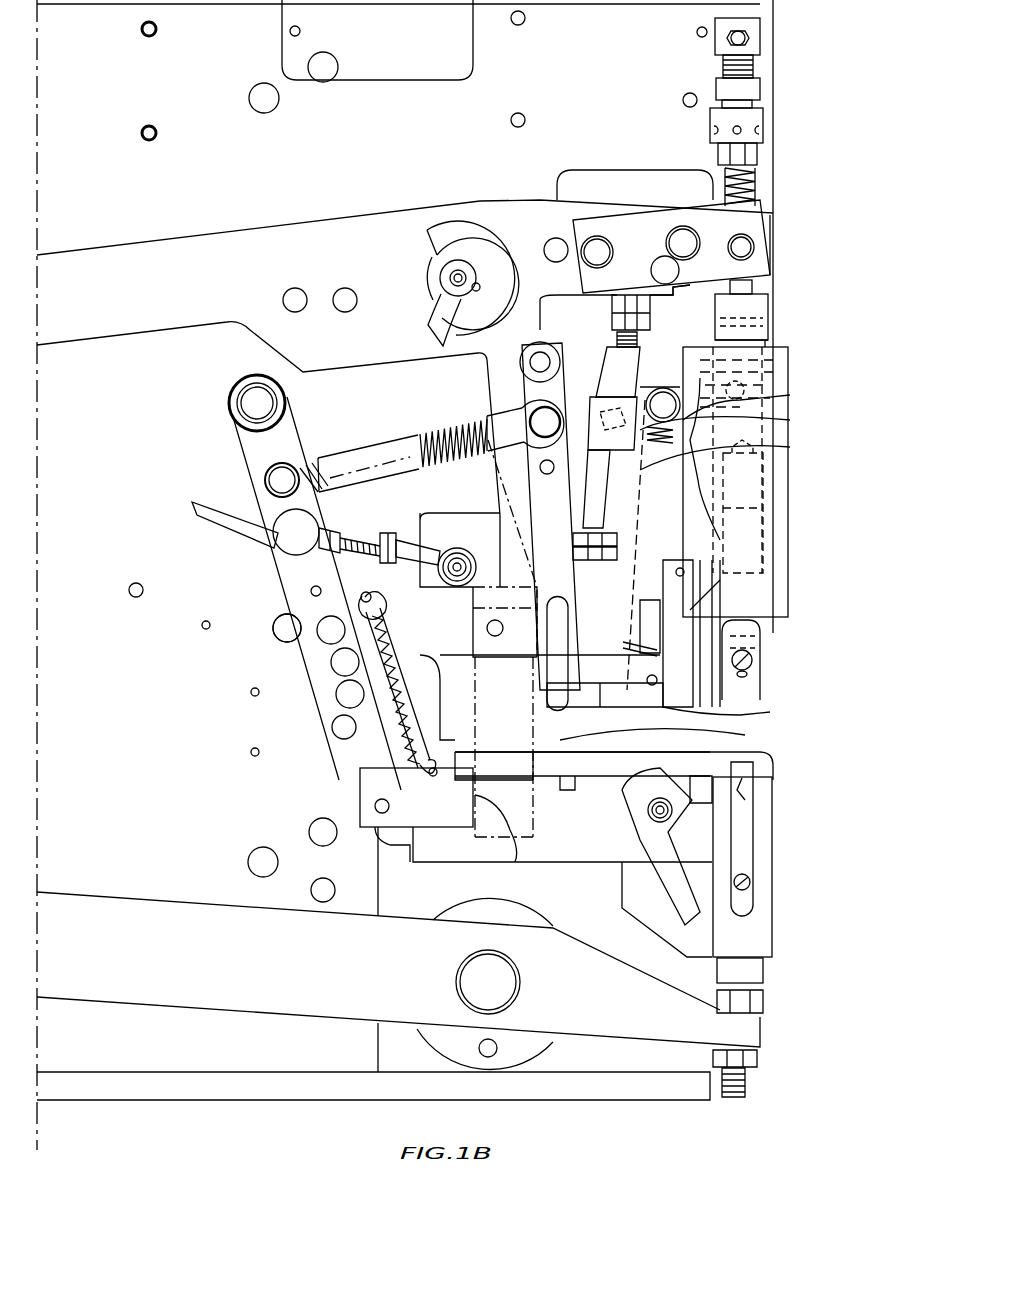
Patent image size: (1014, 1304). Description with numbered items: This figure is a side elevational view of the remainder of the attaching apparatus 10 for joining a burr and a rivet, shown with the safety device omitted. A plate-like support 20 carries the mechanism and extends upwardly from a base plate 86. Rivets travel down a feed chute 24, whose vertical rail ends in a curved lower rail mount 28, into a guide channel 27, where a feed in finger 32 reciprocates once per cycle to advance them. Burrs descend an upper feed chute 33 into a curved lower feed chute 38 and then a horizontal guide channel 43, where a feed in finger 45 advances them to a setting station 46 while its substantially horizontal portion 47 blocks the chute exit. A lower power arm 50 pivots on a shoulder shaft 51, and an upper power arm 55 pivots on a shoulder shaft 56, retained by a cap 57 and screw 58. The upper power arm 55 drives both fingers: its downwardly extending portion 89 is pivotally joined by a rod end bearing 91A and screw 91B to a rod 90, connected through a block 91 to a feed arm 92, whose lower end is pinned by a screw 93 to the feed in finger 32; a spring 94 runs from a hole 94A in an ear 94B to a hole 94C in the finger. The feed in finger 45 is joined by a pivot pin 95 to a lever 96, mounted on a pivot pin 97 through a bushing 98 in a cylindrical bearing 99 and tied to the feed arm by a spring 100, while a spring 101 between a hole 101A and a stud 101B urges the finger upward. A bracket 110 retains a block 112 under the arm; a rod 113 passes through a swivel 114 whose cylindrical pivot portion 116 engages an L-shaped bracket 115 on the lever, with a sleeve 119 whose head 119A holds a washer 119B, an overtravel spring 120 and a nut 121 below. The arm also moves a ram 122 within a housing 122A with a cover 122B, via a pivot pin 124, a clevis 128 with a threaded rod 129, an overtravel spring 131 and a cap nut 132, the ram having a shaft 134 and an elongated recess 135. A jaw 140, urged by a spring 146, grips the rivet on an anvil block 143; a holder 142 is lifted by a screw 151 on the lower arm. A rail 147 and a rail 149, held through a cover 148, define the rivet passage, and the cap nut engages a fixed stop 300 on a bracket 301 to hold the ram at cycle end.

The attaching apparatus 10 is at (845, 690).
The plate-like support 20 is at (206, 167).
The feed chute 24 is at (572, 780).
The guide channel 27 is at (515, 862).
The curved lower rail mount 28 is at (533, 835).
The feed in finger 32 is at (382, 870).
The upper feed chute 33 is at (740, 530).
The curved lower feed chute 38 is at (700, 600).
The guide channel 43 is at (762, 640).
The feed in finger 45 is at (745, 735).
The setting station 46 is at (775, 741).
The substantially horizontal portion 47 is at (754, 662).
The lower power arm 50 is at (167, 1000).
The shoulder shaft 51 is at (520, 973).
The upper power arm 55 is at (596, 195).
The shoulder shaft 56 is at (425, 252).
The cap 57 is at (430, 307).
The screw 58 is at (428, 333).
The base plate 86 is at (620, 1100).
The downwardly extending portion 89 is at (420, 432).
The rod 90 is at (232, 500).
The block 91 is at (275, 540).
The rod end bearing 91A is at (405, 538).
The screw 91B is at (455, 545).
The feed arm 92 is at (290, 592).
The screw 93 is at (365, 800).
The spring 94 is at (395, 655).
The hole 94A is at (385, 612).
The ear 94B is at (300, 640).
The hole 94C is at (435, 760).
The pivot pin 95 is at (558, 705).
The lever 96 is at (540, 680).
The pivot pin 97 is at (553, 335).
The bushing 98 is at (527, 413).
The cylindrical bearing 99 is at (520, 362).
The spring 100 is at (392, 445).
The spring 101 is at (700, 605).
The hole 101A is at (755, 715).
The stud 101B is at (790, 395).
The bracket 110 is at (700, 186).
The block 112 is at (665, 300).
The rod 113 is at (763, 480).
The swivel 114 is at (600, 400).
The L-shaped bracket 115 is at (528, 481).
The cylindrical pivot portion 116 is at (660, 399).
The sleeve 119 is at (643, 352).
The head 119A is at (790, 446).
The washer 119B is at (790, 419).
The overtravel spring 120 is at (575, 497).
The nut 121 is at (620, 558).
The ram 122 is at (790, 373).
The housing 122A is at (770, 330).
The cover 122B is at (788, 530).
The pivot pin 124 is at (765, 268).
The clevis 128 is at (768, 303).
The threaded rod 129 is at (752, 287).
The overtravel spring 131 is at (755, 182).
The cap nut 132 is at (758, 155).
The shaft 134 is at (770, 345).
The elongated recess 135 is at (770, 541).
The jaw 140 is at (772, 787).
The holder 142 is at (763, 972).
The anvil block 143 is at (772, 820).
The spring 146 is at (760, 880).
The rail 147 is at (405, 850).
The cover 148 is at (502, 755).
The rail 149 is at (575, 862).
The screw 151 is at (763, 1003).
The fixed stop 300 is at (764, 115).
The bracket 301 is at (760, 35).